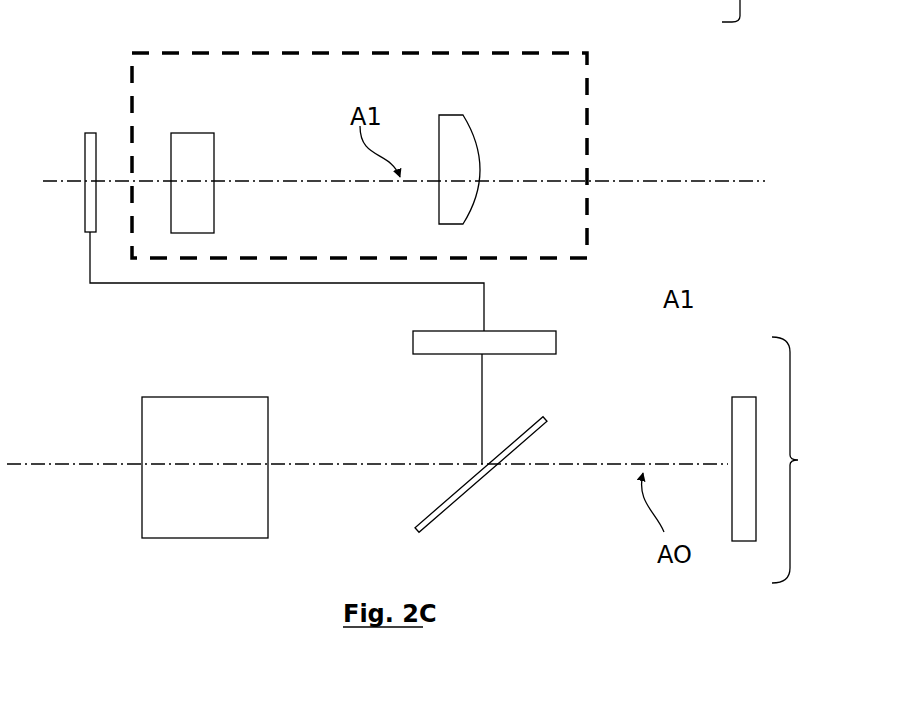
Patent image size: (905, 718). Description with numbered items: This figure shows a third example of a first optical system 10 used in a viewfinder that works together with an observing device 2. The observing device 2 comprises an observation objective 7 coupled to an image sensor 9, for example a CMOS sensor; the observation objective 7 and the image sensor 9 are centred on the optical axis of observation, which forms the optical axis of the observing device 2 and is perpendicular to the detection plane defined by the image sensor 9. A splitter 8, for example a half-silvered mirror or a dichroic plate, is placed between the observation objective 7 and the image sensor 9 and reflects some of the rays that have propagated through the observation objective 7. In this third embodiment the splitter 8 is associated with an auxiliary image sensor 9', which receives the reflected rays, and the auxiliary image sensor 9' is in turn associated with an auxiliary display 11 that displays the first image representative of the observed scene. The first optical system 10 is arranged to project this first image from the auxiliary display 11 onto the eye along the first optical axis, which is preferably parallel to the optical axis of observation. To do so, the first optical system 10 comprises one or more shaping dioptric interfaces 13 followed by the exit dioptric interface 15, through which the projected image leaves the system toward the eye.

The first optical system 10 is at (518, 52).
The auxiliary display 11 is at (90, 136).
The shaping dioptric interfaces 13 is at (190, 160).
The exit dioptric interface 15 is at (459, 208).
The auxiliary image sensor 9' is at (518, 356).
The observation objective 7 is at (178, 408).
The splitter 8 is at (517, 428).
The image sensor 9 is at (717, 451).
The observing device 2 is at (798, 460).